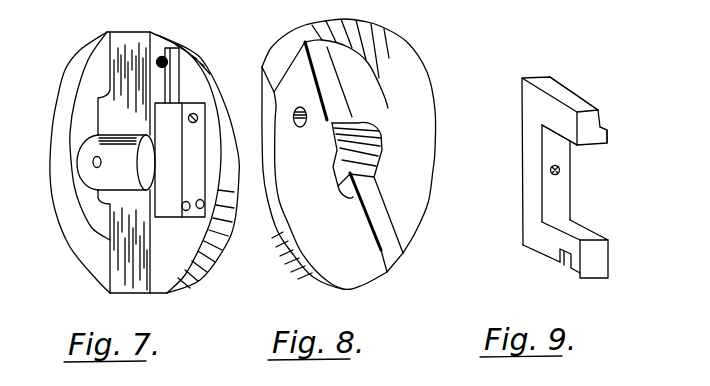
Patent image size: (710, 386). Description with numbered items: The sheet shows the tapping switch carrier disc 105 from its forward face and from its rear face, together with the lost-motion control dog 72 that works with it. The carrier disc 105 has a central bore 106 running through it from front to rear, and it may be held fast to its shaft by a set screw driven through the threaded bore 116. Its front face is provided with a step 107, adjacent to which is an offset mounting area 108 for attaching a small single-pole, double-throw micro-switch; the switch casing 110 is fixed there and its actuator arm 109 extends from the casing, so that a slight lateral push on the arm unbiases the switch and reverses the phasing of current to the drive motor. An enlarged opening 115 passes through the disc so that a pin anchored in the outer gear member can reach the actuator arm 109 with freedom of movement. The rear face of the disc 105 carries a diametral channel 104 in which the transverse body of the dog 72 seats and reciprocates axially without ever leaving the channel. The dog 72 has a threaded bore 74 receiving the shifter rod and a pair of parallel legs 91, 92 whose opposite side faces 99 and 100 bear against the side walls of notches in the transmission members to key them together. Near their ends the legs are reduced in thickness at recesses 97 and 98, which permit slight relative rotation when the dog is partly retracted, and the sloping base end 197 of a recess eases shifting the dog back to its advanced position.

In FIG. 7, the tapping switch carrier disc 105 is at (89, 58).
In FIG. 8, the tapping switch carrier disc 105 is at (352, 21).
In FIG. 8, the diametral channel 104 is at (338, 100).
In FIG. 7, the central bore 106 is at (88, 182).
In FIG. 8, the central bore 106 is at (381, 135).
In FIG. 7, the step 107 is at (130, 287).
In FIG. 7, the offset mounting area 108 is at (190, 262).
In FIG. 7, the actuator arm 109 is at (173, 65).
In FIG. 7, the casing 110 is at (170, 148).
In FIG. 7, the enlarged opening 115 is at (162, 58).
In FIG. 8, the enlarged opening 115 is at (294, 114).
In FIG. 7, the threaded bore 116 is at (92, 161).
In FIG. 9, the lost-motion control dog 72 is at (527, 208).
In FIG. 9, the threaded bore 74 is at (560, 170).
In FIG. 9, the leg 91 is at (560, 90).
In FIG. 9, the leg 92 is at (587, 235).
In FIG. 9, the recess 97 is at (600, 117).
In FIG. 9, the recess 98 is at (575, 267).
In FIG. 9, the side face 99 is at (567, 127).
In FIG. 9, the side face 100 is at (608, 138).
In FIG. 9, the sloping base end 197 is at (580, 97).